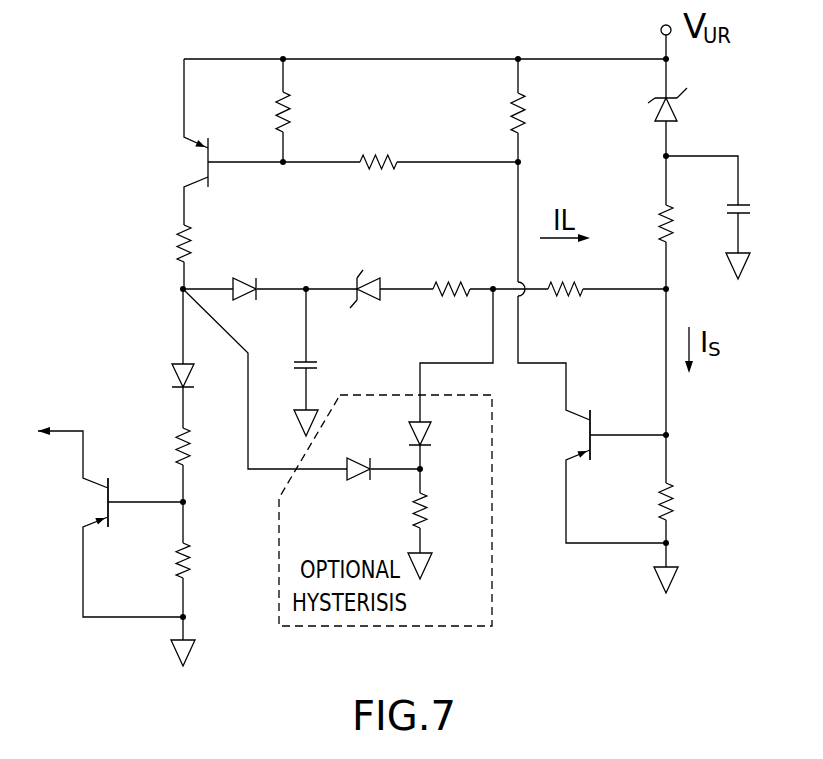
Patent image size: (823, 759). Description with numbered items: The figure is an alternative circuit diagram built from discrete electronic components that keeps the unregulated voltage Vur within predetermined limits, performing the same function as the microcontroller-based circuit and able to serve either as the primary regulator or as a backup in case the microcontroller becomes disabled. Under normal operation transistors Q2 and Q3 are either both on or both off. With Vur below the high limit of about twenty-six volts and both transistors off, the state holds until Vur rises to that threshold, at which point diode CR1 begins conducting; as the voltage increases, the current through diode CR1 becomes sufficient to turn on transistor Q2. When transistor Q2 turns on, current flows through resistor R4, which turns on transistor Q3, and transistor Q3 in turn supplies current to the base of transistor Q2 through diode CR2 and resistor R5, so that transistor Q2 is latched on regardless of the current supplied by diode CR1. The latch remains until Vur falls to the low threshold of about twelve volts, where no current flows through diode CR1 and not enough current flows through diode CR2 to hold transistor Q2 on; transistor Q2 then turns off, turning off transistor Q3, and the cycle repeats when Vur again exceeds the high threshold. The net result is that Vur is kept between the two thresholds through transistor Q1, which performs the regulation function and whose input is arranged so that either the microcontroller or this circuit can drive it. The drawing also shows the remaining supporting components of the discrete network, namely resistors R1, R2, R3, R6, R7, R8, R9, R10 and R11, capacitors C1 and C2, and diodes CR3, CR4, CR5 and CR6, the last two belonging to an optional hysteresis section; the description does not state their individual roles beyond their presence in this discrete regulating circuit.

The resistor R1 is at (686, 223).
The resistor R2 is at (308, 110).
The resistor R3 is at (552, 110).
The resistor R4 is at (378, 166).
The resistor R5 is at (565, 290).
The resistor R6 is at (451, 290).
The resistor R7 is at (164, 243).
The resistor R8 is at (157, 448).
The resistor R9 is at (209, 560).
The resistor R10 is at (692, 502).
The resistor R11 is at (446, 511).
The capacitor C1 is at (756, 208).
The capacitor C2 is at (323, 365).
The diode CR1 is at (690, 109).
The diode CR2 is at (366, 288).
The diode CR3 is at (247, 269).
The diode CR4 is at (158, 377).
The diode CR5 is at (445, 433).
The diode CR6 is at (358, 449).
The transistor Q1 is at (78, 502).
The transistor Q2 is at (558, 435).
The transistor Q3 is at (177, 162).